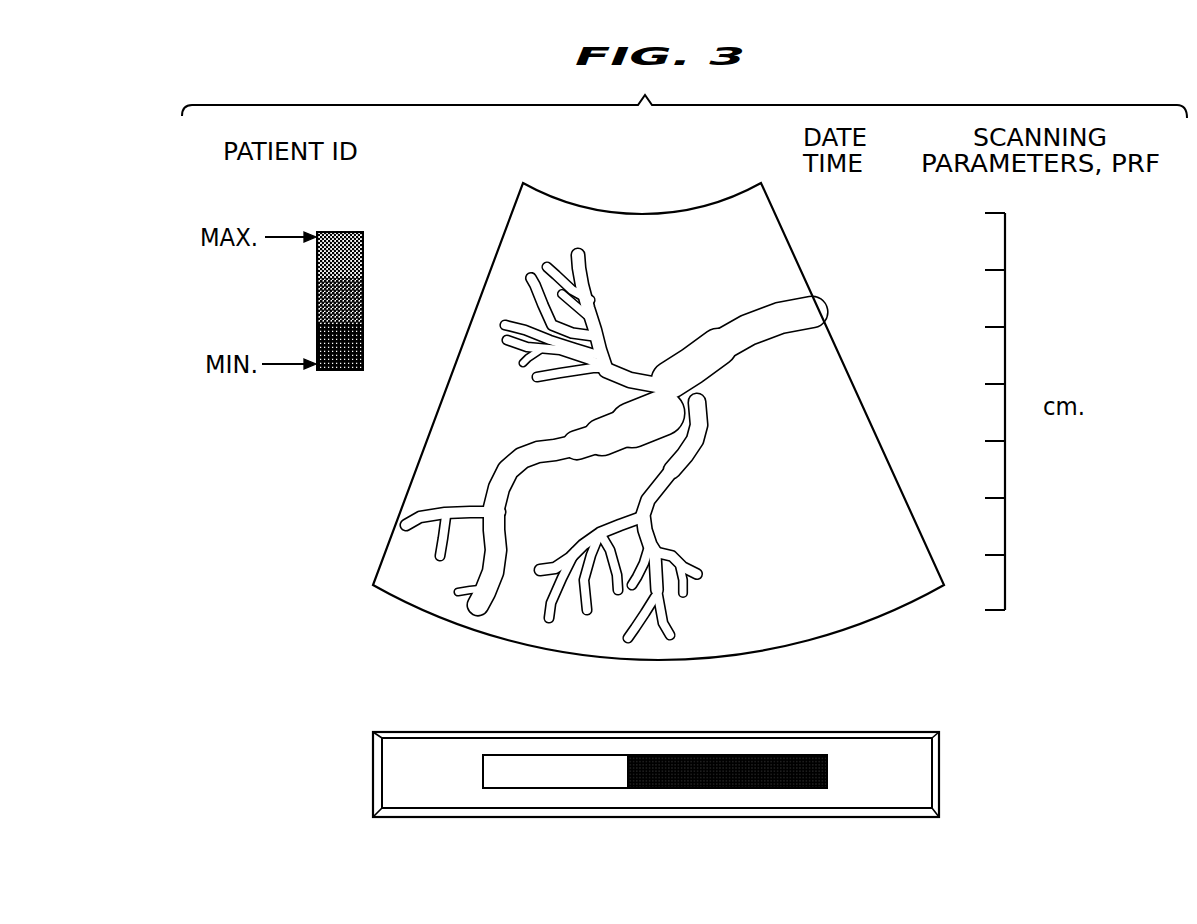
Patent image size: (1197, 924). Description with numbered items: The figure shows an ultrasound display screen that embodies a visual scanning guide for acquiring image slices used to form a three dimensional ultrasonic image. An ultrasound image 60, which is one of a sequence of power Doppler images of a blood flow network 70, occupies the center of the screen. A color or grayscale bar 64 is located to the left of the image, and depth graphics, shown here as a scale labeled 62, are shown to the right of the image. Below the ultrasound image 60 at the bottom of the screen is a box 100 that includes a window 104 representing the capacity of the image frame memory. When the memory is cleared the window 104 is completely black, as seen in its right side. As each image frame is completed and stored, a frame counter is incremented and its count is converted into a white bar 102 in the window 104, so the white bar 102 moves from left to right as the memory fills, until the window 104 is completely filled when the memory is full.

The ultrasound image 60 is at (517, 197).
The depth scale 62 is at (993, 363).
The color or grayscale bar 64 is at (347, 282).
The blood flow network 70 is at (803, 305).
The box 100 is at (702, 794).
The white bar 102 is at (545, 783).
The window 104 is at (747, 783).